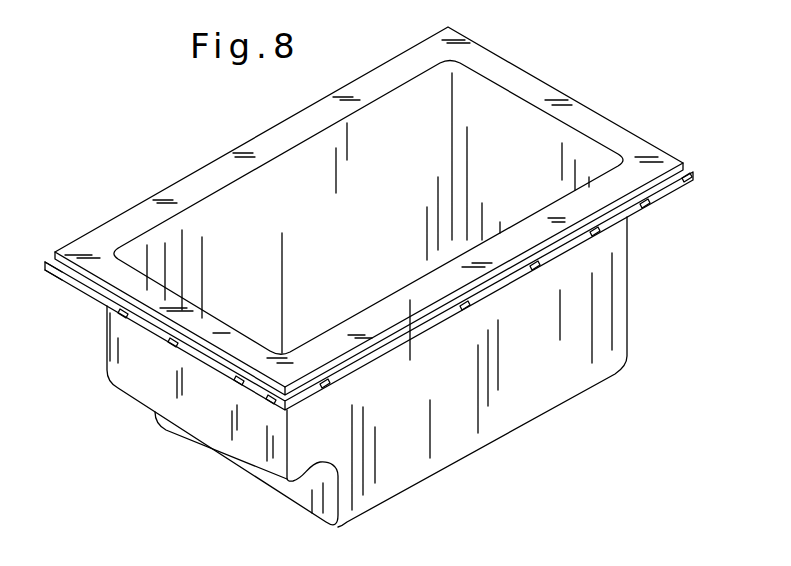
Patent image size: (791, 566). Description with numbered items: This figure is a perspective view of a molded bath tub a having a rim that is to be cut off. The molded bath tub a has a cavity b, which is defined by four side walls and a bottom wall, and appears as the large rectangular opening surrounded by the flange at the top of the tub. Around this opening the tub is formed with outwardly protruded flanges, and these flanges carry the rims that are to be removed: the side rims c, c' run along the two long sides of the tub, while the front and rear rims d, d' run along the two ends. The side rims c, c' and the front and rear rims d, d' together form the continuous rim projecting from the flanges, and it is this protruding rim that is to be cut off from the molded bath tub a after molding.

The molded bath tub a is at (93, 346).
The cavity b is at (510, 103).
The side rim c is at (44, 242).
The side rim c' is at (369, 291).
The front rim d is at (185, 367).
The rear rim d' is at (523, 247).